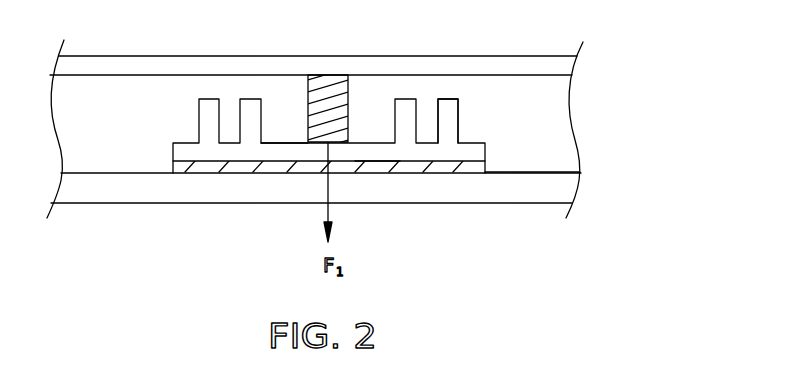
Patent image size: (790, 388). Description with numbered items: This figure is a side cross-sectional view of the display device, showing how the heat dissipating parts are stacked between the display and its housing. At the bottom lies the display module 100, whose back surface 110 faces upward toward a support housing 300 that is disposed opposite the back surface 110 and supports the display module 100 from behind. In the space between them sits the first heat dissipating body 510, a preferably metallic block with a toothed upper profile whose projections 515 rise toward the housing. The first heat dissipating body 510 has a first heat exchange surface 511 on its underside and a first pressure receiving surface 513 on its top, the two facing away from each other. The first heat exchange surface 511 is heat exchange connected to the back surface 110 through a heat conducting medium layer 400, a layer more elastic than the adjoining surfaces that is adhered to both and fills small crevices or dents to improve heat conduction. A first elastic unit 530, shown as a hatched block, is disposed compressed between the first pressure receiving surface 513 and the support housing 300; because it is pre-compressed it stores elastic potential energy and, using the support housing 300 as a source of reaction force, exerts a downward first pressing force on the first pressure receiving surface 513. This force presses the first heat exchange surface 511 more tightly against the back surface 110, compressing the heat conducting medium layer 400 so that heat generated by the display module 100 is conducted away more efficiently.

The display module 100 is at (508, 188).
The back surface 110 is at (531, 171).
The support housing 300 is at (534, 63).
The heat conducting medium layer 400 is at (268, 167).
The first heat dissipating body 510 is at (230, 152).
The first heat exchange surface 511 is at (375, 163).
The first pressure receiving surface 513 is at (283, 141).
The protrusion 515 is at (448, 117).
The first elastic unit 530 is at (342, 97).